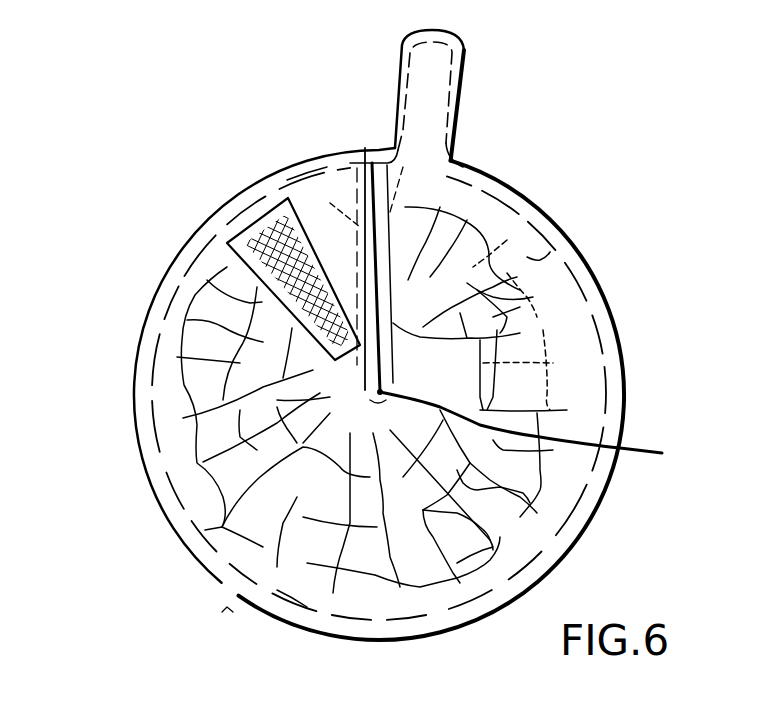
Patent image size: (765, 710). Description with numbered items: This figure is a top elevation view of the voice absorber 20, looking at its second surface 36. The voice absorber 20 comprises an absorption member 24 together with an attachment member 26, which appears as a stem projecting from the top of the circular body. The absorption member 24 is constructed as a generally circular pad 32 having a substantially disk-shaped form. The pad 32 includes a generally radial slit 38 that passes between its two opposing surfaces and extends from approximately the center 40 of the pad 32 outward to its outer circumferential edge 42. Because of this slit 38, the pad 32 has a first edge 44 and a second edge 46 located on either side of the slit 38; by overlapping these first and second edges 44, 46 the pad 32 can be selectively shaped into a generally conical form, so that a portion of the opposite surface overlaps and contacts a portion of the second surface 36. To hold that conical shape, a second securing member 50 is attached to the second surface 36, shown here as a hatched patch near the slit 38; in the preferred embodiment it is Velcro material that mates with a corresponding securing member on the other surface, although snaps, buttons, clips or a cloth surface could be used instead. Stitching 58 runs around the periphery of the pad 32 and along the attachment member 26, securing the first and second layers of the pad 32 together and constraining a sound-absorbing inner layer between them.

The voice absorber 20 is at (120, 230).
The absorption member 24 is at (579, 227).
The attachment member 26 is at (470, 73).
The pad 32 is at (187, 393).
The second surface 36 is at (525, 387).
The slit 38 is at (437, 288).
The center 40 is at (543, 430).
The outer circumferential edge 42 is at (165, 520).
The first edge 44 is at (355, 184).
The second edge 46 is at (384, 307).
The second securing member 50 is at (258, 240).
The stitching 58 is at (398, 118).